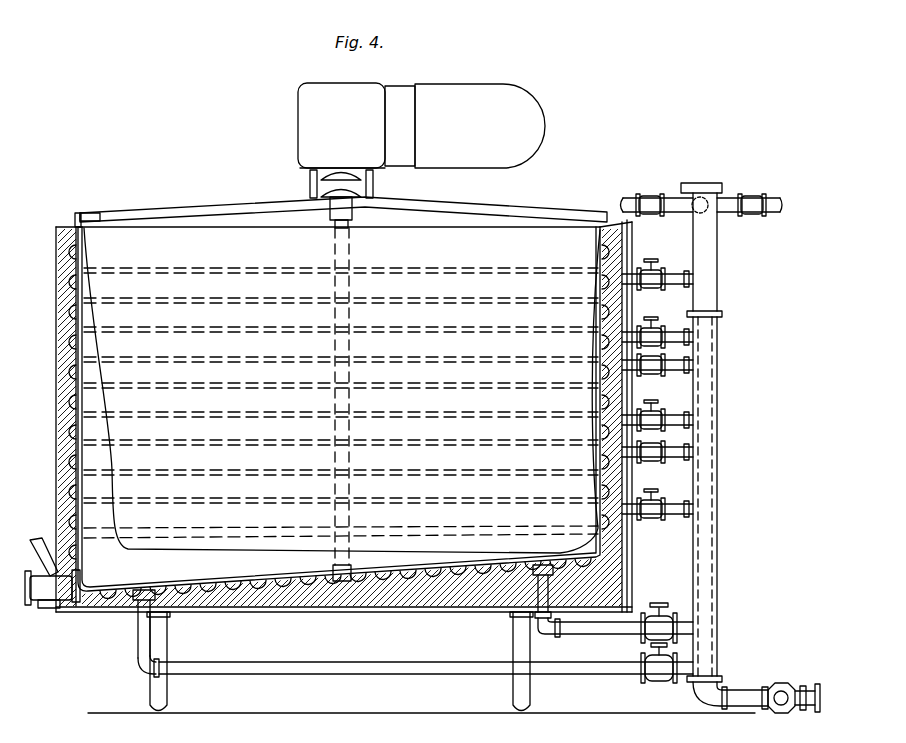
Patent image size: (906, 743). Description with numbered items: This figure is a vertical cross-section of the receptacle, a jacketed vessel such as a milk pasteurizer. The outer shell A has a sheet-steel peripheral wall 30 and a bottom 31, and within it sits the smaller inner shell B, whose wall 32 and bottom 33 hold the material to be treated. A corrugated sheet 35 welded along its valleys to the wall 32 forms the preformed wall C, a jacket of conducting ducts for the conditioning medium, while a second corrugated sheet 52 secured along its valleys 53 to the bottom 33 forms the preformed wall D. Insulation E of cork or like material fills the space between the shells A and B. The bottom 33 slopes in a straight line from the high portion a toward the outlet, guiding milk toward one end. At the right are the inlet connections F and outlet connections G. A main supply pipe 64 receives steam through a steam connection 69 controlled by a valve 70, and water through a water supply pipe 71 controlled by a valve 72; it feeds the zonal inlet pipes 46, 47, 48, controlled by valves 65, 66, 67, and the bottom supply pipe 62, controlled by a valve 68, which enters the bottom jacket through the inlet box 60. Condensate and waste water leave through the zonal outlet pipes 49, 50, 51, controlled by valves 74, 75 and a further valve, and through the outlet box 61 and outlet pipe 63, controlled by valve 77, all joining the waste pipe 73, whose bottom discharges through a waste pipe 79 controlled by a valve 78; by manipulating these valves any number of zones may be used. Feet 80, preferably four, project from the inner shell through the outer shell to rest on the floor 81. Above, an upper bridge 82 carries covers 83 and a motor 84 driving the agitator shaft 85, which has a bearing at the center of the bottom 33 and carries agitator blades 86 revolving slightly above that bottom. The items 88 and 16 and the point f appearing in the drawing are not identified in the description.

The motor 84 is at (488, 90).
The lid clamp 88 is at (90, 212).
The covers 83 is at (405, 214).
The upper bridge 82 is at (490, 206).
The steam connection 69 is at (627, 200).
The valve 70 is at (650, 196).
The water supply pipe 71 is at (778, 205).
The valve 72 is at (756, 196).
The main supply pipe 64 is at (712, 295).
The waste pipe 73 is at (718, 364).
The valve 65 is at (655, 272).
The inlet pipe 46 is at (632, 270).
The valve 74 is at (652, 320).
The outlet pipe 49 is at (668, 333).
The valve 66 is at (658, 375).
The inlet pipe 47 is at (632, 405).
The outlet pipe 50 is at (666, 421).
The valve 75 is at (661, 446).
The valve 67 is at (634, 462).
The inlet pipe 48 is at (677, 458).
The coil connection 16 is at (648, 518).
The outlet pipe 51 is at (677, 516).
The valve 68 is at (660, 603).
The inlet pipe 62 is at (580, 612).
The valve 77 is at (655, 678).
The waste pipe 79 is at (737, 692).
The valve 78 is at (780, 687).
The inlet box 60 is at (541, 564).
The outlet box 61 is at (142, 590).
The outlet pipe 63 is at (140, 640).
The feet 80 is at (168, 690).
The floor 81 is at (248, 712).
The bottom 31 is at (110, 612).
The agitator blades 86 is at (196, 520).
The agitator shaft 85 is at (352, 570).
The corrugated sheet 35 is at (62, 283).
The peripheral wall 30 is at (64, 352).
The wall 32 is at (72, 362).
The bottom 33 is at (268, 586).
The corrugated sheet 52 is at (362, 612).
The valleys 53 is at (266, 612).
The inlet connections F is at (724, 230).
The outlet connections G is at (726, 657).
The outer shell A is at (52, 401).
The inner shell B is at (68, 408).
The preformed wall C is at (66, 432).
The preformed wall D is at (272, 618).
The insulation E is at (64, 472).
The liquid f is at (104, 571).
The high portion a is at (590, 539).